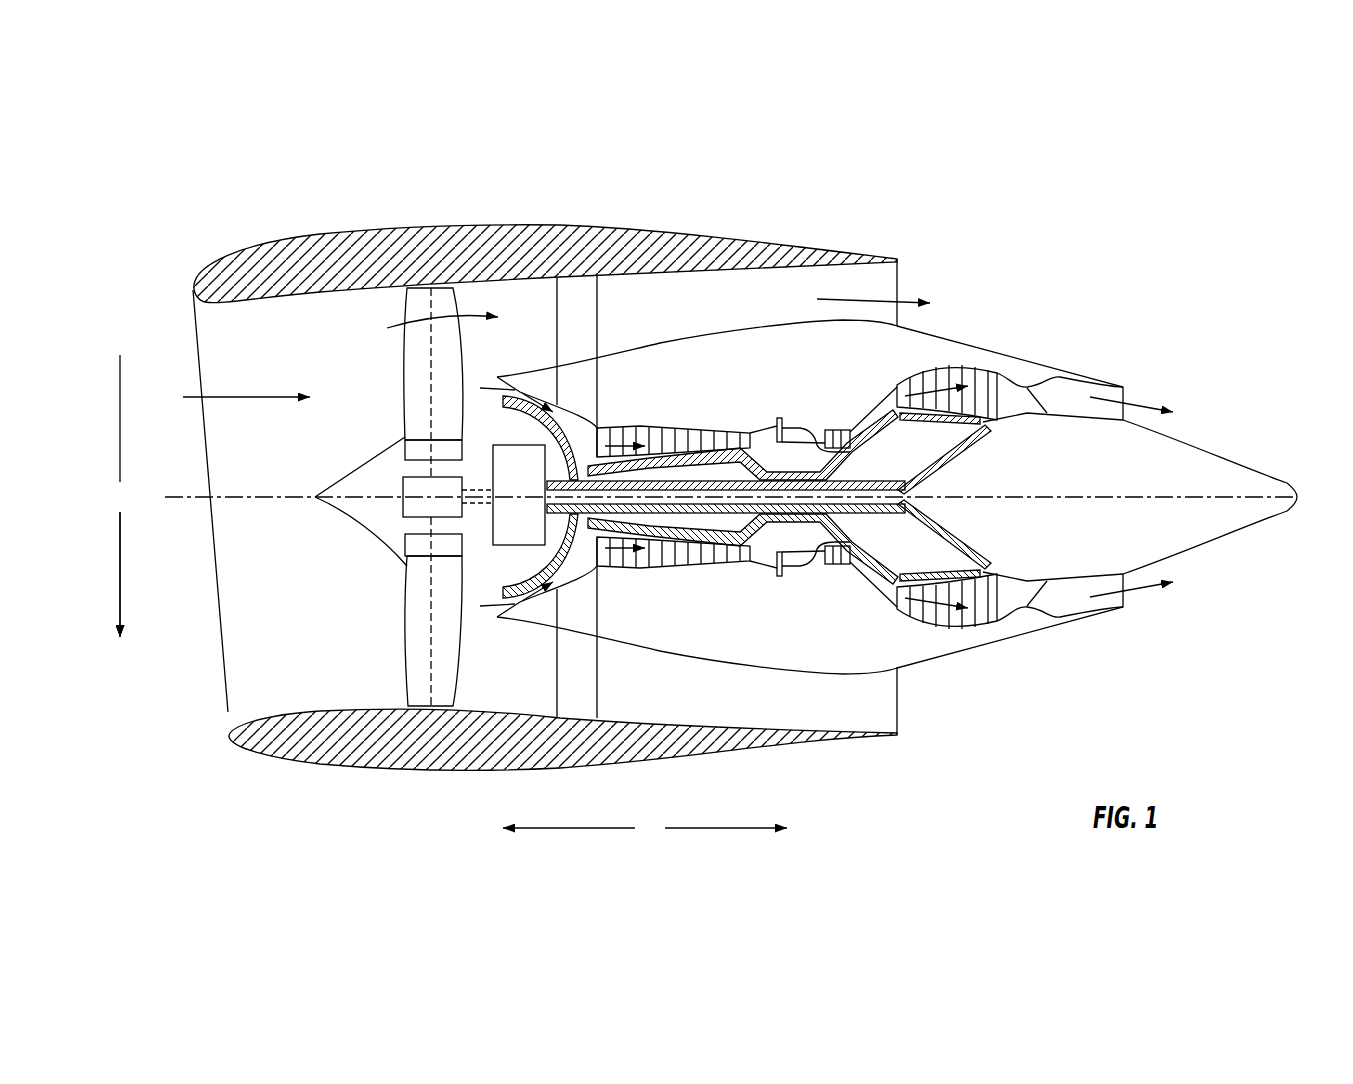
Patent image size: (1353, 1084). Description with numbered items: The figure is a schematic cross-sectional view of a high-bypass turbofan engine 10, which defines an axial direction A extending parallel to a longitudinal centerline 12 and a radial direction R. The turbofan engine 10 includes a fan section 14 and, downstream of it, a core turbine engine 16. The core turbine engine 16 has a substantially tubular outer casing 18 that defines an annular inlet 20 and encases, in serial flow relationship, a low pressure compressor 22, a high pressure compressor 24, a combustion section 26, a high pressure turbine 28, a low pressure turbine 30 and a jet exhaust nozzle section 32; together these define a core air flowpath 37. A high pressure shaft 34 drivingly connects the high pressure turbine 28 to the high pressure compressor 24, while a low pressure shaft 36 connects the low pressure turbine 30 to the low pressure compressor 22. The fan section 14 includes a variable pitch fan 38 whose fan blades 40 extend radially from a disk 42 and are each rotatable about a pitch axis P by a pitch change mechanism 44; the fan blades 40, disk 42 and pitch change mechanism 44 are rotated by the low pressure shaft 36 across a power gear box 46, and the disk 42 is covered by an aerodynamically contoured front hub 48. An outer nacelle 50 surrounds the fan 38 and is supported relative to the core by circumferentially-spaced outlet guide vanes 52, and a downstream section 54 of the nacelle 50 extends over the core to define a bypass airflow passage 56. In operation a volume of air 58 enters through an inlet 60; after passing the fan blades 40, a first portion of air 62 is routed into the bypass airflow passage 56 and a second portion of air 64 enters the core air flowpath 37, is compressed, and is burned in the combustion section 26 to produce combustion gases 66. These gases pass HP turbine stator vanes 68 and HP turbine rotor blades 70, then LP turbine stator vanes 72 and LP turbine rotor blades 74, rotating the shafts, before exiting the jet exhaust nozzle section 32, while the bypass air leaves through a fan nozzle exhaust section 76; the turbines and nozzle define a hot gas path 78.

The turbofan engine 10 is at (704, 496).
The longitudinal centerline 12 is at (1065, 495).
The fan section 14 is at (552, 513).
The core turbine engine 16 is at (881, 447).
The outer casing 18 is at (753, 660).
The annular inlet 20 is at (500, 603).
The low pressure compressor 22 is at (557, 555).
The high pressure compressor 24 is at (625, 550).
The combustion section 26 is at (797, 560).
The high pressure turbine 28 is at (880, 567).
The low pressure turbine 30 is at (980, 623).
The jet exhaust nozzle section 32 is at (1040, 606).
The high pressure shaft 34 is at (838, 458).
The low pressure shaft 36 is at (935, 462).
The core air flowpath 37 is at (580, 547).
The variable pitch fan 38 is at (372, 551).
The fan blades 40 is at (431, 426).
The disk 42 is at (423, 452).
The pitch change mechanism 44 is at (405, 480).
The power gear box 46 is at (528, 460).
The front hub 48 is at (327, 512).
The outer nacelle 50 is at (453, 772).
The outlet guide vanes 52 is at (597, 303).
The downstream section 54 is at (845, 258).
The bypass airflow passage 56 is at (771, 314).
The volume of air 58 is at (247, 393).
The inlet 60 is at (228, 712).
The first portion of air 62 is at (420, 332).
The second portion of air 64 is at (493, 380).
The combustion gases 66 is at (940, 383).
The HP turbine stator vanes 68 is at (817, 560).
The HP turbine rotor blades 70 is at (910, 524).
The LP turbine stator vanes 72 is at (905, 617).
The LP turbine rotor blades 74 is at (923, 623).
The fan nozzle exhaust section 76 is at (887, 287).
The hot gas path 78 is at (876, 406).
The pitch axis P is at (437, 303).
The radial direction R is at (118, 496).
The axial direction A is at (645, 828).